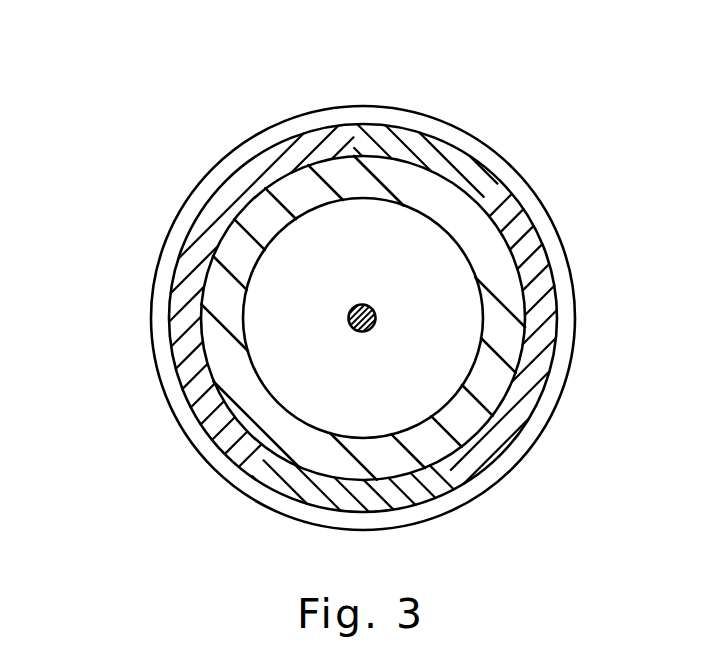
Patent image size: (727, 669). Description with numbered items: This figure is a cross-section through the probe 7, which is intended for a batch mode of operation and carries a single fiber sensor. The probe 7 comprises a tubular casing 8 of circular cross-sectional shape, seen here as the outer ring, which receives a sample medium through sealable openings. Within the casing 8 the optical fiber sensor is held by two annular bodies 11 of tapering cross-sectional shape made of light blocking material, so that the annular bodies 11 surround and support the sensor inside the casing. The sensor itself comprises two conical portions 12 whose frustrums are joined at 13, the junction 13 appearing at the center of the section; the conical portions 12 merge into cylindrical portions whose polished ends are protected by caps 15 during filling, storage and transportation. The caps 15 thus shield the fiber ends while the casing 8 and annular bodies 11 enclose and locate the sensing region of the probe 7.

The probe 7 is at (462, 106).
The tubular casing 8 is at (540, 277).
The annular bodies 11 is at (468, 218).
The conical portions 12 is at (300, 273).
The junction of conical portions 13 is at (368, 332).
The caps 15 is at (175, 400).